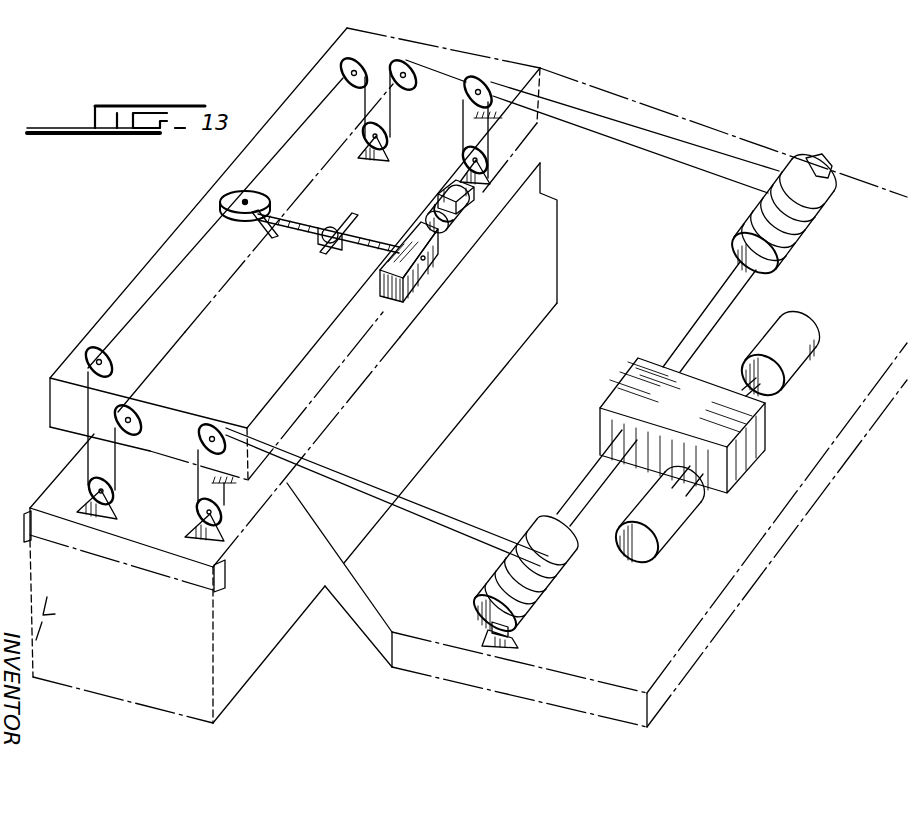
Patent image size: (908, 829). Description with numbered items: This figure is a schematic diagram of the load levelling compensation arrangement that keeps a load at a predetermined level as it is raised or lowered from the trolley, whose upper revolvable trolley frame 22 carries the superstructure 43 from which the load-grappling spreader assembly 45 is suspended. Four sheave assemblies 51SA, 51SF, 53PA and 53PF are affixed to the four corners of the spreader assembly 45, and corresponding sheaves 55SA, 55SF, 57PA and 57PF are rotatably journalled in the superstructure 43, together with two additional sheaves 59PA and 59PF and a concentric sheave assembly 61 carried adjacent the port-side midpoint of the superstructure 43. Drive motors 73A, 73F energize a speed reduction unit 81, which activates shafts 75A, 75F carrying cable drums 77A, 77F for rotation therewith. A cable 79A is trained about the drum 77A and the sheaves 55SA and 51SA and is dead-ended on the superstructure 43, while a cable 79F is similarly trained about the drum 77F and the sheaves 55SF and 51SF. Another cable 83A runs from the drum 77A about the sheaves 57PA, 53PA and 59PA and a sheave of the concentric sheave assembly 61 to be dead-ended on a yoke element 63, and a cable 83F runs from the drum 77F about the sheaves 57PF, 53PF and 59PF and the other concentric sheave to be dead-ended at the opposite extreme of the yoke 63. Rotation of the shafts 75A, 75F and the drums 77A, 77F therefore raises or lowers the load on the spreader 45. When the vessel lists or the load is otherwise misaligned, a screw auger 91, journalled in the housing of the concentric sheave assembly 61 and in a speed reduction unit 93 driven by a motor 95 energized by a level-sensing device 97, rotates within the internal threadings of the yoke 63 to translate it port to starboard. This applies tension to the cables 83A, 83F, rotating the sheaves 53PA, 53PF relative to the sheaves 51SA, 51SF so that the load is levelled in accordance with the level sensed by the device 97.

The upper revolvable trolley frame 22 is at (462, 660).
The superstructure 43 is at (316, 552).
The load-grappling spreader assembly 45 is at (62, 485).
The sheave assembly 51SA is at (198, 518).
The sheave assembly 51SF is at (462, 154).
The sheave assembly 53PA is at (115, 500).
The sheave assembly 53PF is at (390, 130).
The sheave 55SA is at (232, 409).
The sheave 55SF is at (481, 78).
The sheave 57PA is at (140, 418).
The sheave 57PF is at (410, 59).
The sheave 59PA is at (108, 352).
The sheave 59PF is at (344, 70).
The concentric sheave assembly 61 is at (232, 213).
The yoke element 63 is at (338, 244).
The drive motor 73A is at (670, 510).
The drive motor 73F is at (797, 330).
The shaft 75A is at (572, 492).
The shaft 75F is at (713, 303).
The cable drum 77A is at (532, 522).
The cable drum 77F is at (760, 223).
The cable 79A is at (463, 530).
The cable 79F is at (657, 140).
The speed reduction unit 81 is at (640, 378).
The cable 83A is at (450, 537).
The cable 83F is at (703, 175).
The screw auger 91 is at (369, 238).
The speed reduction unit 93 is at (383, 296).
The motor 95 is at (446, 214).
The level-sensing device 97 is at (473, 202).